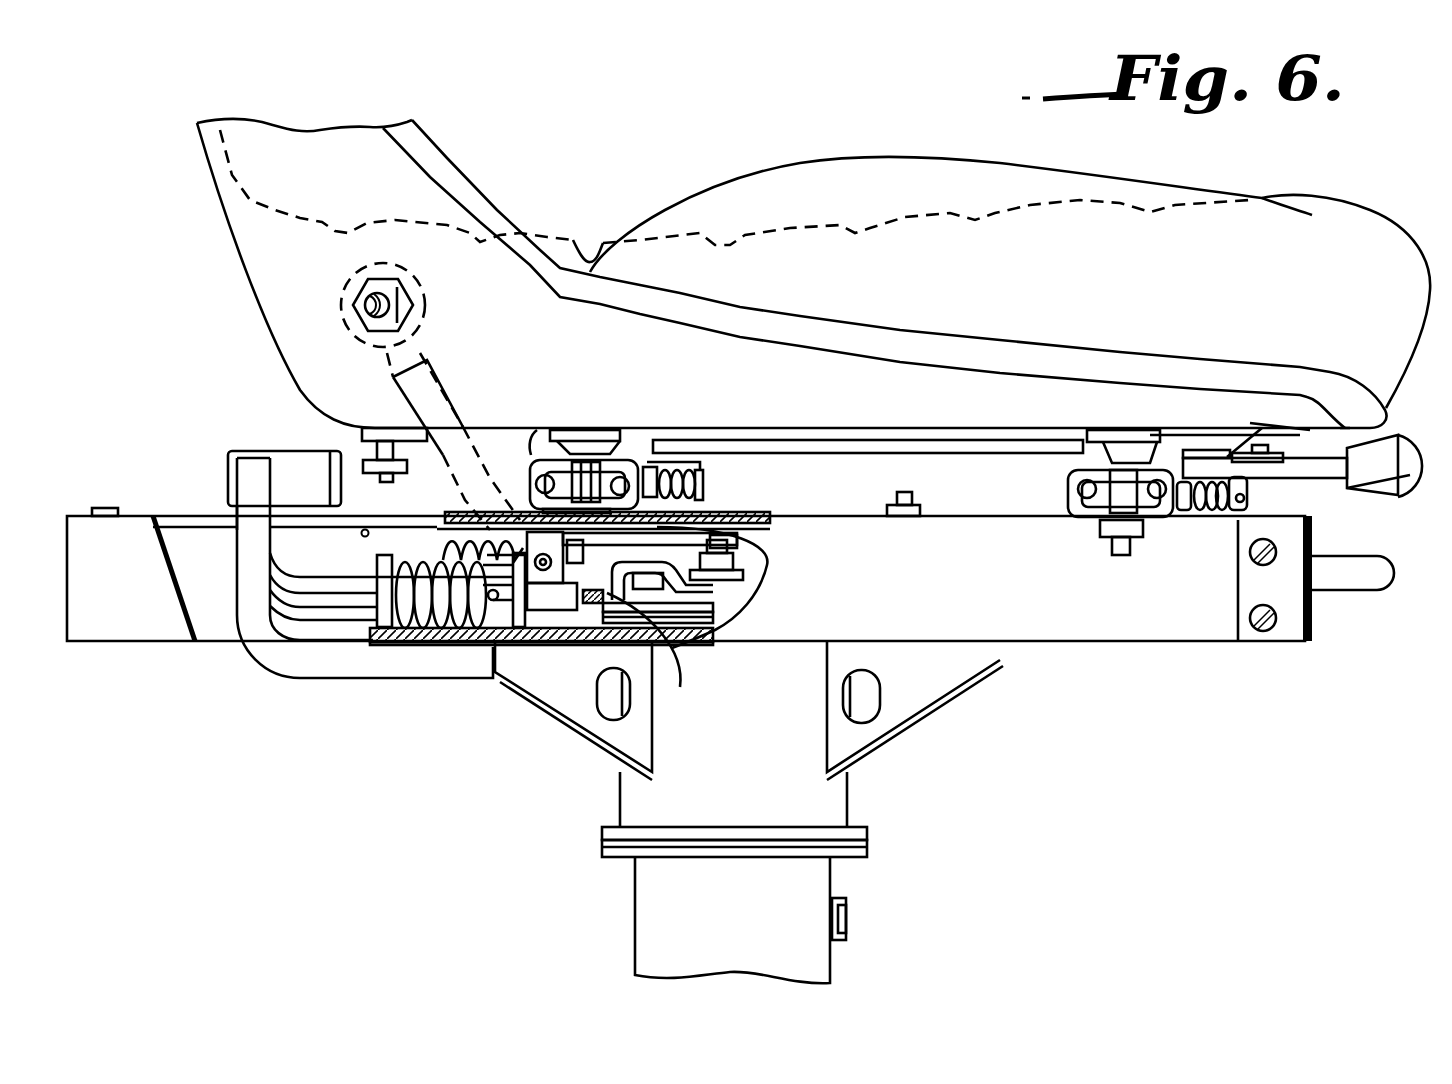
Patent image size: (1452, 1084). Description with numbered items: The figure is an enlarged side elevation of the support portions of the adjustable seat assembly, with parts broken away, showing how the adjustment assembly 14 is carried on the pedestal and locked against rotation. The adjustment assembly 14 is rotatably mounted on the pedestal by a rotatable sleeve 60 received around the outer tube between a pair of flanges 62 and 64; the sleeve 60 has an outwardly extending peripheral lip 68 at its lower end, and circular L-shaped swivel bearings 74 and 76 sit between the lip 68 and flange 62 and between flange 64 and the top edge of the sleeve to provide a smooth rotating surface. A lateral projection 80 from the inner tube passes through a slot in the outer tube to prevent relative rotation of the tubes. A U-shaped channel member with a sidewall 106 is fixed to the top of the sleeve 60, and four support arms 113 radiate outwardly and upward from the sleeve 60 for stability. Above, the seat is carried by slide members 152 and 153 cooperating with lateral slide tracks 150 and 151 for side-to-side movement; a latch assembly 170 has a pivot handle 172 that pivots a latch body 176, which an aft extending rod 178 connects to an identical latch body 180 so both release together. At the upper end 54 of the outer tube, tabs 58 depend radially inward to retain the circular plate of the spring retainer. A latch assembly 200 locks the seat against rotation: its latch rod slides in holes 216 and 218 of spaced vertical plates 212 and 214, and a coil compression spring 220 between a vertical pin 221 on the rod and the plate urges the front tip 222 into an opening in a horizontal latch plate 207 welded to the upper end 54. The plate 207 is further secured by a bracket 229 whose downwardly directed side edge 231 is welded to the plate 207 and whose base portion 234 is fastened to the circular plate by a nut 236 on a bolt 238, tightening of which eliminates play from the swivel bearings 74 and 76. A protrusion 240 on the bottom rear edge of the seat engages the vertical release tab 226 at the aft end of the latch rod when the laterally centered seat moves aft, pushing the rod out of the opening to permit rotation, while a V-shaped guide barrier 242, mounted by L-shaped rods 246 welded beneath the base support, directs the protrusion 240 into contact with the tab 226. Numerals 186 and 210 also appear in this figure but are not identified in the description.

The adjustment assembly 14 is at (1338, 545).
The upper end of outer tube 54 is at (629, 556).
The tabs 58 is at (716, 632).
The rotatable sleeve 60 is at (845, 786).
The flange 62 is at (870, 857).
The flange 64 is at (623, 634).
The peripheral lip 68 is at (870, 830).
The swivel bearing 74 is at (870, 843).
The swivel bearing 76 is at (715, 642).
The lateral projection 80 is at (838, 917).
The sidewall 106 is at (1147, 632).
The support arms 113 is at (950, 688).
The lateral slide track 150 is at (1066, 470).
The lateral slide track 151 is at (510, 462).
The slide member 152 is at (1093, 466).
The slide member 153 is at (550, 447).
The latch assembly 170 is at (1338, 455).
The pivot handle 172 is at (1372, 488).
The latch body 176 is at (1258, 434).
The aft extending rod 178 is at (805, 440).
The latch body 180 is at (704, 470).
The pin 186 is at (1368, 584).
The latch assembly 200 is at (385, 508).
The latch plate 207 is at (703, 602).
The U-shaped tube 210 is at (368, 648).
The vertical plate 212 is at (712, 511).
The vertical plate 214 is at (378, 567).
The hole 216 is at (565, 596).
The hole 218 is at (378, 604).
The coil compression spring 220 is at (470, 648).
The vertical pin 221 is at (450, 556).
The front tip 222 is at (550, 627).
The release tab 226 is at (237, 516).
The bracket 229 is at (745, 556).
The lateral side edge 231 is at (662, 655).
The base portion 234 is at (665, 586).
The nut 236 is at (752, 574).
The bolt 238 is at (745, 545).
The protrusion 240 is at (378, 452).
The guide barrier 242 is at (287, 462).
The L-shaped rods 246 is at (238, 572).